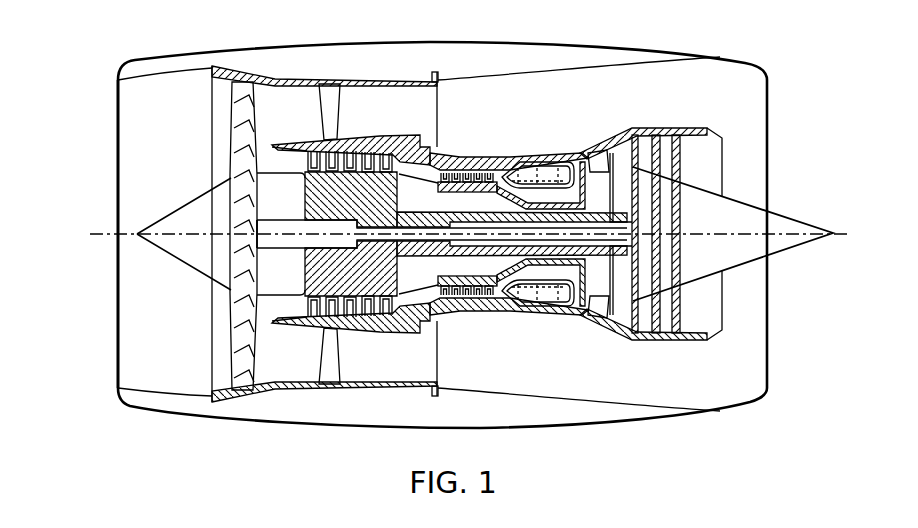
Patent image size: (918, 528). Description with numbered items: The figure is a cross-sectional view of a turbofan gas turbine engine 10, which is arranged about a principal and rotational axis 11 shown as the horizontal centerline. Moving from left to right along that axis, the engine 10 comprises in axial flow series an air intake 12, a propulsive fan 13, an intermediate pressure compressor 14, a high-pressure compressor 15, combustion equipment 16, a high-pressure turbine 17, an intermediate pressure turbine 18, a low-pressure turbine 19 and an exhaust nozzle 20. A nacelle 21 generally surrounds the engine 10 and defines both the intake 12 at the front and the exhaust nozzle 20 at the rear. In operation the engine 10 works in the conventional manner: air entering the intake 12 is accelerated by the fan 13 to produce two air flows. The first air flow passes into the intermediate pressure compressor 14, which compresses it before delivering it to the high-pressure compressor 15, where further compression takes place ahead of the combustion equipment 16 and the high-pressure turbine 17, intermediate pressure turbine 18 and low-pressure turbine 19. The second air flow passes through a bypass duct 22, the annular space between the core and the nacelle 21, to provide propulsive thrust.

The turbofan gas turbine engine 10 is at (104, 124).
The principal and rotational axis 11 is at (127, 233).
The air intake 12 is at (182, 77).
The propulsive fan 13 is at (237, 355).
The intermediate pressure compressor 14 is at (378, 332).
The high-pressure compressor 15 is at (468, 160).
The combustion equipment 16 is at (527, 297).
The high-pressure turbine 17 is at (580, 313).
The intermediate pressure turbine 18 is at (618, 153).
The low-pressure turbine 19 is at (637, 337).
The exhaust nozzle 20 is at (750, 102).
The nacelle 21 is at (593, 48).
The bypass duct 22 is at (381, 119).